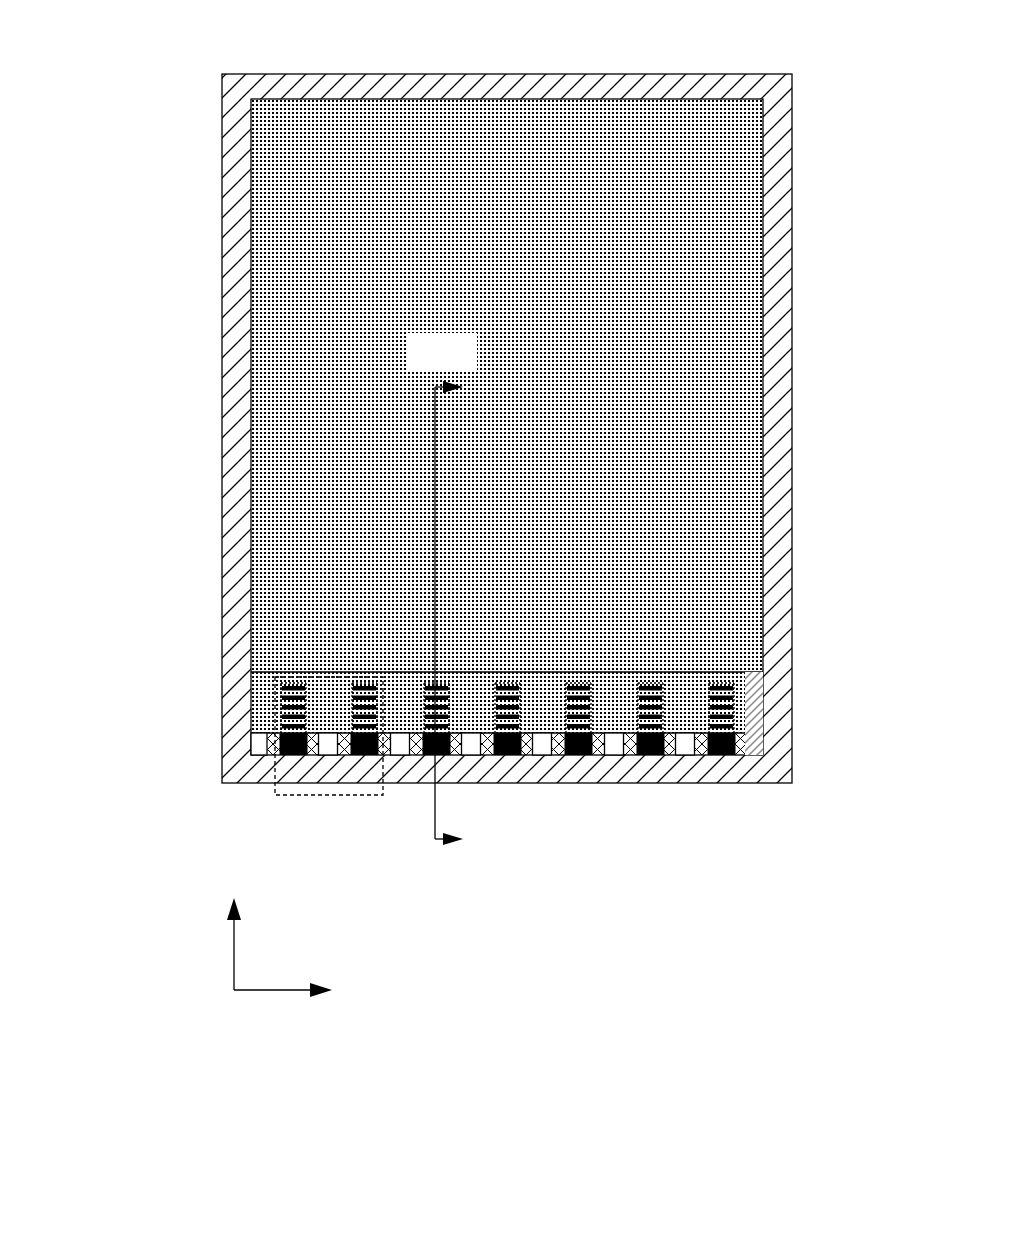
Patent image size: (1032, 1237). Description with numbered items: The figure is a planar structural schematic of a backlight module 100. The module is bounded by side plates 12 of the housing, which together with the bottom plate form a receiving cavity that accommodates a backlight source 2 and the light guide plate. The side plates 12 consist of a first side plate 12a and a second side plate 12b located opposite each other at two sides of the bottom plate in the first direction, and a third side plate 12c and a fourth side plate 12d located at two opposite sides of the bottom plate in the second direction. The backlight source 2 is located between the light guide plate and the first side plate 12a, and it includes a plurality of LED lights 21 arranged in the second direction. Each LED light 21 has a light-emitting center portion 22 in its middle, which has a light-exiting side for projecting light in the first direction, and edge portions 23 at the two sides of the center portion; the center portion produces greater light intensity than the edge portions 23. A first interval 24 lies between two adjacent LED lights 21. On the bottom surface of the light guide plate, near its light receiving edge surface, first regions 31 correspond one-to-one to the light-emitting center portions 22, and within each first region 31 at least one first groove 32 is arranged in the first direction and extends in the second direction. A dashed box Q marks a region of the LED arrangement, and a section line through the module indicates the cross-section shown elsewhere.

The backlight module 100 is at (876, 32).
The side plates 12 is at (118, 440).
The first side plate 12a is at (262, 773).
The second side plate 12b is at (352, 90).
The third side plate 12c is at (237, 133).
The fourth side plate 12d is at (790, 172).
The backlight source 2 is at (758, 755).
The LED lights 21 is at (638, 843).
The light-emitting center portion 22 is at (580, 750).
The edge portions 23 is at (558, 750).
The first interval 24 is at (404, 746).
The first regions 31 is at (732, 702).
The first groove 32 is at (718, 727).
The enlarged region Q is at (320, 795).